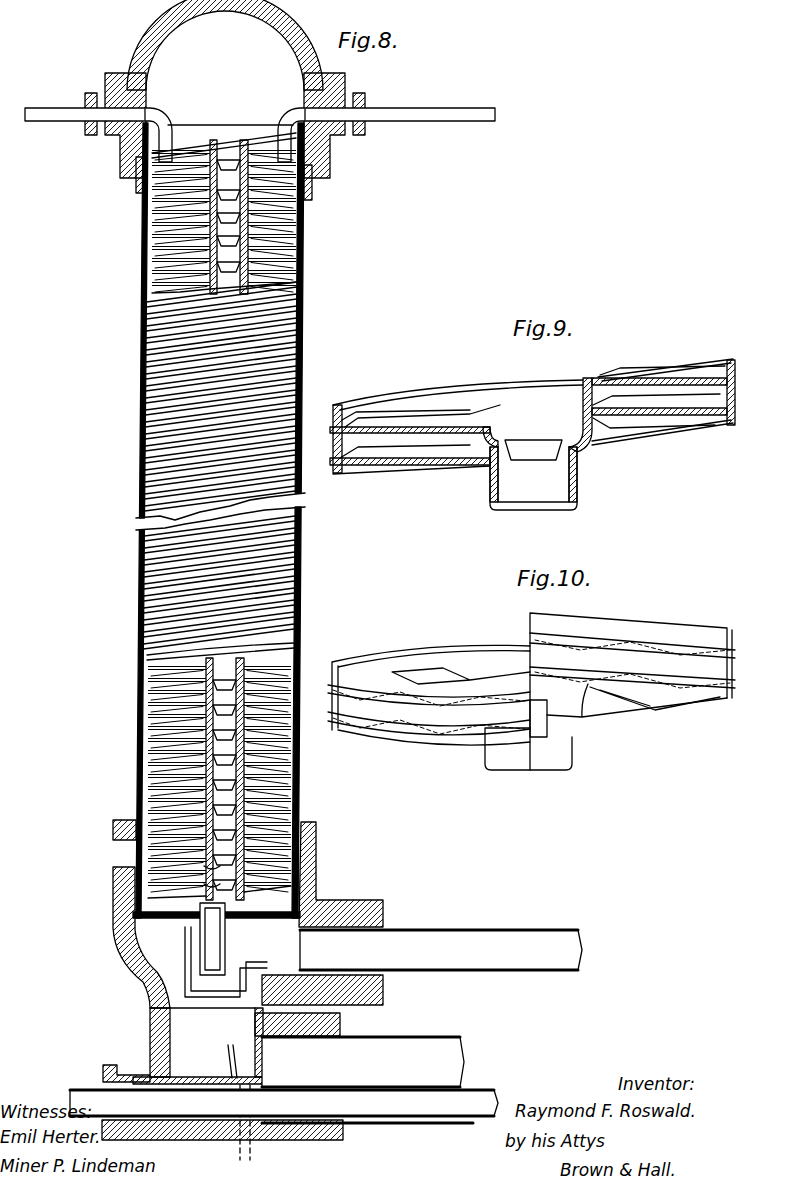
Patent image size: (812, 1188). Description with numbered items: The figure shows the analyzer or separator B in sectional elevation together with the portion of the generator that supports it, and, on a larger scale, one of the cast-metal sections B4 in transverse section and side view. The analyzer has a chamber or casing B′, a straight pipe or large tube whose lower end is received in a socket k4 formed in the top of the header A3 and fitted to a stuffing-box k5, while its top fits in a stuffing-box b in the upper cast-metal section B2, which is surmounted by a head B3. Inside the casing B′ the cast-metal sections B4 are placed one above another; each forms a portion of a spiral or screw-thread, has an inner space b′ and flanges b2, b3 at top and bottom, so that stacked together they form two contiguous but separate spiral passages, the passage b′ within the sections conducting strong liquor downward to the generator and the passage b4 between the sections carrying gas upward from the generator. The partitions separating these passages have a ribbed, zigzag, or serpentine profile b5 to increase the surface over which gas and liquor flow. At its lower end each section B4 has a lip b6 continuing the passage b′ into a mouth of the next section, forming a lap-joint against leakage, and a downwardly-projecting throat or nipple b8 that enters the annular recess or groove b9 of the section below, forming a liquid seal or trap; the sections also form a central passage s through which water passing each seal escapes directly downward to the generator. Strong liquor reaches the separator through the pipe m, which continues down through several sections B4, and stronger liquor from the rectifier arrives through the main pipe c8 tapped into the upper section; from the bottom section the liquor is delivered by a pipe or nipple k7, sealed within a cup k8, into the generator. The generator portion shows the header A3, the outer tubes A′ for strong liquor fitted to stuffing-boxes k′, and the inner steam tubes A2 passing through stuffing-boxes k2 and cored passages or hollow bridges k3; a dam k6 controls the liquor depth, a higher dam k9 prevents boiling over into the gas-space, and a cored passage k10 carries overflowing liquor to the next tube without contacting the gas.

In FIG. 8, the analyzer or separator B is at (286, 439).
In FIG. 8, the chamber or casing B′ is at (145, 323).
In FIG. 8, the upper cast-metal section B2 is at (230, 110).
In FIG. 8, the head B3 is at (225, 45).
In FIG. 8, the cast-metal sections B4 is at (205, 159).
In FIG. 9, the cast-metal sections B4 is at (528, 433).
In FIG. 10, the cast-metal sections B4 is at (543, 684).
In FIG. 8, the stuffing-box b is at (225, 139).
In FIG. 8, the spiral passage b′ is at (137, 169).
In FIG. 9, the spiral passage b′ is at (400, 433).
In FIG. 9, the flange b2 is at (547, 411).
In FIG. 10, the flange b2 is at (532, 686).
In FIG. 9, the flange b3 is at (538, 456).
In FIG. 10, the flange b3 is at (440, 745).
In FIG. 8, the spiral passage b4 is at (290, 262).
In FIG. 9, the spiral passage b4 is at (395, 405).
In FIG. 9, the ribbed, zigzag, or serpentine profile b5 is at (392, 435).
In FIG. 10, the ribbed, zigzag, or serpentine profile b5 is at (465, 668).
In FIG. 10, the lip b6 is at (547, 724).
In FIG. 8, the downwardly-projecting throat or nipple b8 is at (210, 877).
In FIG. 9, the downwardly-projecting throat or nipple b8 is at (533, 478).
In FIG. 10, the downwardly-projecting throat or nipple b8 is at (528, 749).
In FIG. 8, the annular recess or groove b9 is at (211, 858).
In FIG. 9, the annular recess or groove b9 is at (537, 415).
In FIG. 8, the central passage s is at (227, 520).
In FIG. 9, the central passage s is at (533, 459).
In FIG. 8, the main pipe c8 is at (98, 127).
In FIG. 8, the pipe m is at (386, 128).
In FIG. 8, the outer tubes A′ is at (422, 1008).
In FIG. 8, the inner tubes A2 is at (284, 1115).
In FIG. 8, the header A3 is at (200, 1046).
In FIG. 8, the stuffing-boxes k′ is at (319, 1005).
In FIG. 8, the stuffing-boxes k2 is at (126, 1064).
In FIG. 8, the cored passages or hollow bridges k3 is at (182, 1063).
In FIG. 8, the socket k4 is at (291, 906).
In FIG. 8, the stuffing-box k5 is at (304, 849).
In FIG. 8, the dam k6 is at (262, 1082).
In FIG. 8, the pipe or nipple k7 is at (212, 939).
In FIG. 8, the cup k8 is at (226, 962).
In FIG. 8, the higher dam k9 is at (228, 1048).
In FIG. 8, the cored passage k10 is at (260, 1122).